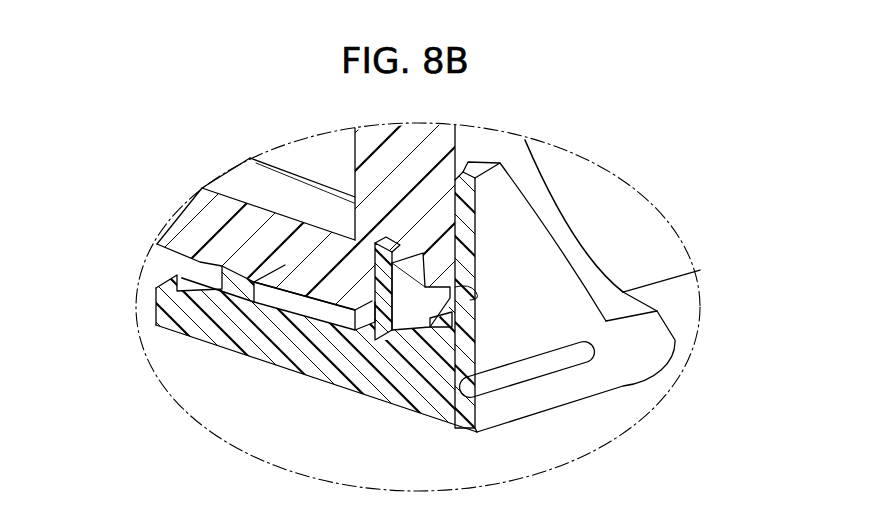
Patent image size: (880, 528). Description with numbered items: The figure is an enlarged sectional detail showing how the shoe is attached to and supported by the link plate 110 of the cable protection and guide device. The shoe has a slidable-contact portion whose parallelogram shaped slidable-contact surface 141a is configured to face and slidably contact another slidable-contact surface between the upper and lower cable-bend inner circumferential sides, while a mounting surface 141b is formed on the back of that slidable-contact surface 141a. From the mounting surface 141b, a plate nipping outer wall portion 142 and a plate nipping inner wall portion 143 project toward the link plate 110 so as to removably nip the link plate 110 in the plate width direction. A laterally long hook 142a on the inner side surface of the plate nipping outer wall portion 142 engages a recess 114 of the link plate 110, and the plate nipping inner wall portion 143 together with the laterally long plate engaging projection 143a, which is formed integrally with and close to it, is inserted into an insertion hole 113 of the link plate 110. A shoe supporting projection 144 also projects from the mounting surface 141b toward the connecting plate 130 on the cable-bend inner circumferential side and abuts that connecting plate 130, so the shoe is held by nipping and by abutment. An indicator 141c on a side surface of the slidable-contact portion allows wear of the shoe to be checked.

The link plate 110 is at (610, 198).
The insertion hole 113 is at (420, 265).
The recess 114 is at (397, 343).
The connecting plate 130 is at (237, 180).
The slidable-contact surface 141a is at (313, 380).
The mounting surface 141b is at (203, 262).
The indicator 141c is at (508, 375).
The plate nipping outer wall portion 142 is at (550, 272).
The hook 142a is at (450, 300).
The plate nipping inner wall portion 143 is at (375, 342).
The plate engaging projection 143a is at (425, 335).
The shoe supporting projection 144 is at (270, 292).